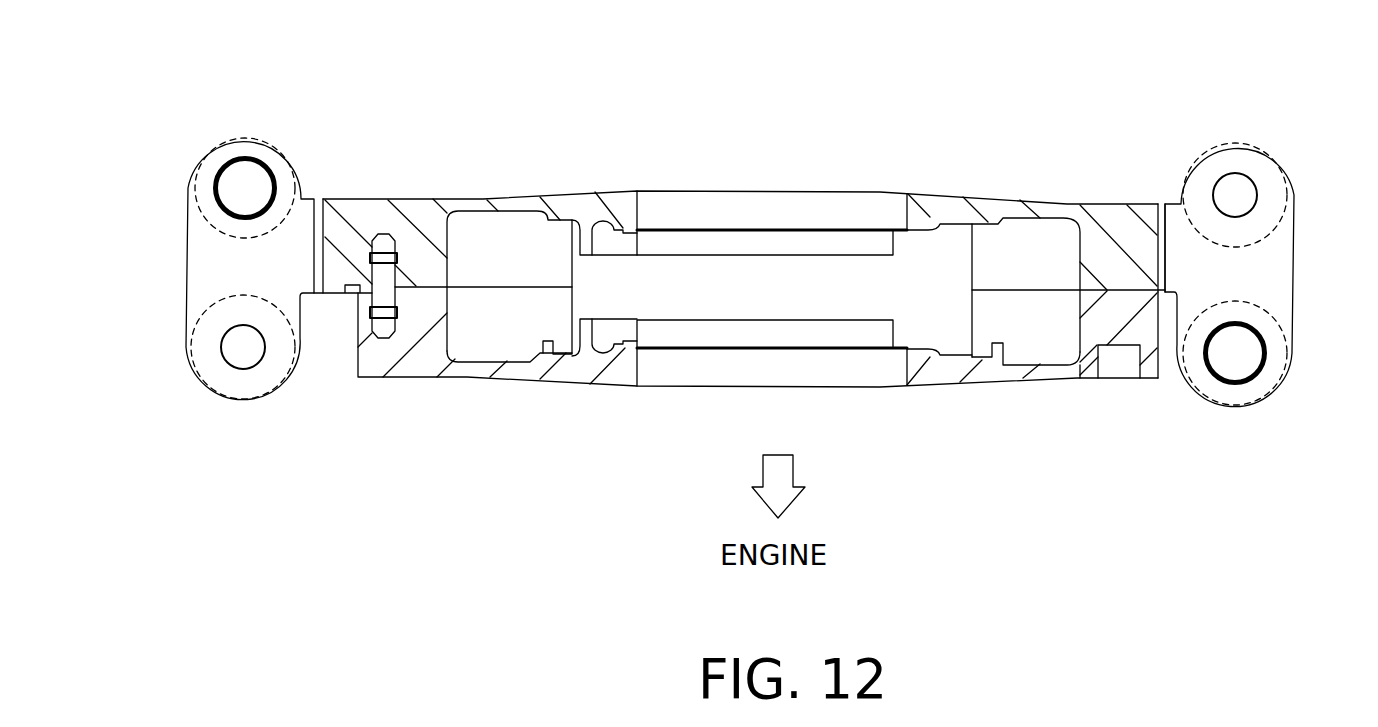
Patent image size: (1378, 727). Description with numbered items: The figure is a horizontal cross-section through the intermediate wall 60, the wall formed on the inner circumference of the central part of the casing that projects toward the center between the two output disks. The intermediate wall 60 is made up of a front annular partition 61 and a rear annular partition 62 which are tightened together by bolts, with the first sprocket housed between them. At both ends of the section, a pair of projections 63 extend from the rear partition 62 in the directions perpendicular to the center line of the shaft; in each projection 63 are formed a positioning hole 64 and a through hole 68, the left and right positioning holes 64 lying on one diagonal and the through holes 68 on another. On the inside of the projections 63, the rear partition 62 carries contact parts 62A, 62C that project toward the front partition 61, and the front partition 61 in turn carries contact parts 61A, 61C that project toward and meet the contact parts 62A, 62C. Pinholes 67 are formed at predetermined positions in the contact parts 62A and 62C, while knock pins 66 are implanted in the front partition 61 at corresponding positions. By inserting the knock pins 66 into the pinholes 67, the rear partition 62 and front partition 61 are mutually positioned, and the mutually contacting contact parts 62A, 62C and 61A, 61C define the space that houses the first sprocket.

The intermediate wall 60 is at (1043, 120).
The front annular partition 61 is at (577, 386).
The contact part 61A is at (457, 352).
The contact part 61C is at (1068, 312).
The rear annular partition 62 is at (583, 196).
The contact part 62A is at (453, 248).
The contact part 62C is at (1080, 256).
The projection 63 is at (205, 275).
The positioning hole 64 is at (250, 176).
The knock pin 66 is at (388, 283).
The pinhole 67 is at (384, 232).
The through hole 68 is at (248, 362).